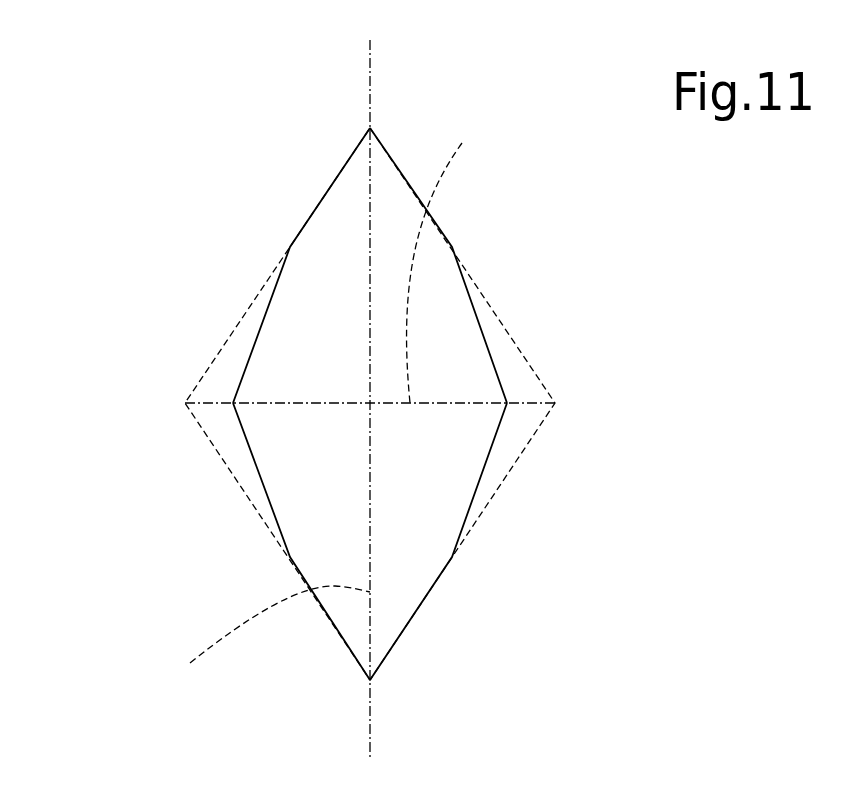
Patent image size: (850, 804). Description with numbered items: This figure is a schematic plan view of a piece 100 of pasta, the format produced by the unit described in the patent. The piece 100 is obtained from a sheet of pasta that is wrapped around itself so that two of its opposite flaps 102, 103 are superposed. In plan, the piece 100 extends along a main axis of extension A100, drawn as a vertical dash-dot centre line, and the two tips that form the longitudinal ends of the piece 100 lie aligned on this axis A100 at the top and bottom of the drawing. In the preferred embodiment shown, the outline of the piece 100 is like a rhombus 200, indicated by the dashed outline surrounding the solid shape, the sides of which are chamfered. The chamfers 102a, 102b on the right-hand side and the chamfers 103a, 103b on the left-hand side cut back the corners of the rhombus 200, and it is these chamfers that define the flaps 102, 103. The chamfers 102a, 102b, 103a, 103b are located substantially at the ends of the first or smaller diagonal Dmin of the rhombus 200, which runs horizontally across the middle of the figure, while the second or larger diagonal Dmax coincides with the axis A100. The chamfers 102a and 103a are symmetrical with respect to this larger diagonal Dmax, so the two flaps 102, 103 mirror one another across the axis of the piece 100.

The piece 100 is at (332, 374).
The rhombus 200 is at (258, 288).
The flap 102 is at (490, 404).
The chamfer 102a is at (482, 300).
The chamfer 102b is at (480, 502).
The flap 103 is at (212, 404).
The chamfer 103a is at (262, 325).
The chamfer 103b is at (243, 467).
The main axis of extension A100 is at (372, 708).
The smaller diagonal Dmin is at (445, 261).
The larger diagonal Dmax is at (262, 640).